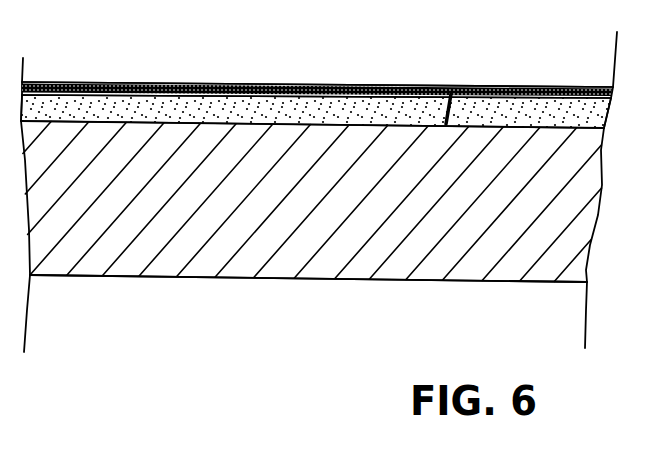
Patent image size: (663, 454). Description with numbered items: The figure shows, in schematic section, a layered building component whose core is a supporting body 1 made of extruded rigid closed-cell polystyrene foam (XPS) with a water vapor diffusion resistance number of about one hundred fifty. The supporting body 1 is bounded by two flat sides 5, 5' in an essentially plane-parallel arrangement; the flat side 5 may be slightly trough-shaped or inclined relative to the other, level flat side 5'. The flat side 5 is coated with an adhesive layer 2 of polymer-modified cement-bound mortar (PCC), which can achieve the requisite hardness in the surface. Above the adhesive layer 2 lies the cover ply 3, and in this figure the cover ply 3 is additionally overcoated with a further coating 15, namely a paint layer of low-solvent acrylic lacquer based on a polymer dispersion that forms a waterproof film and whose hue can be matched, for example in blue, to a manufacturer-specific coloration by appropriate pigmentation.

The supporting body 1 is at (325, 241).
The adhesive layer 2 is at (146, 108).
The cover ply 3 is at (222, 88).
The further coating 15 is at (352, 88).
The flat side 5 is at (454, 78).
The flat side 5' is at (308, 310).